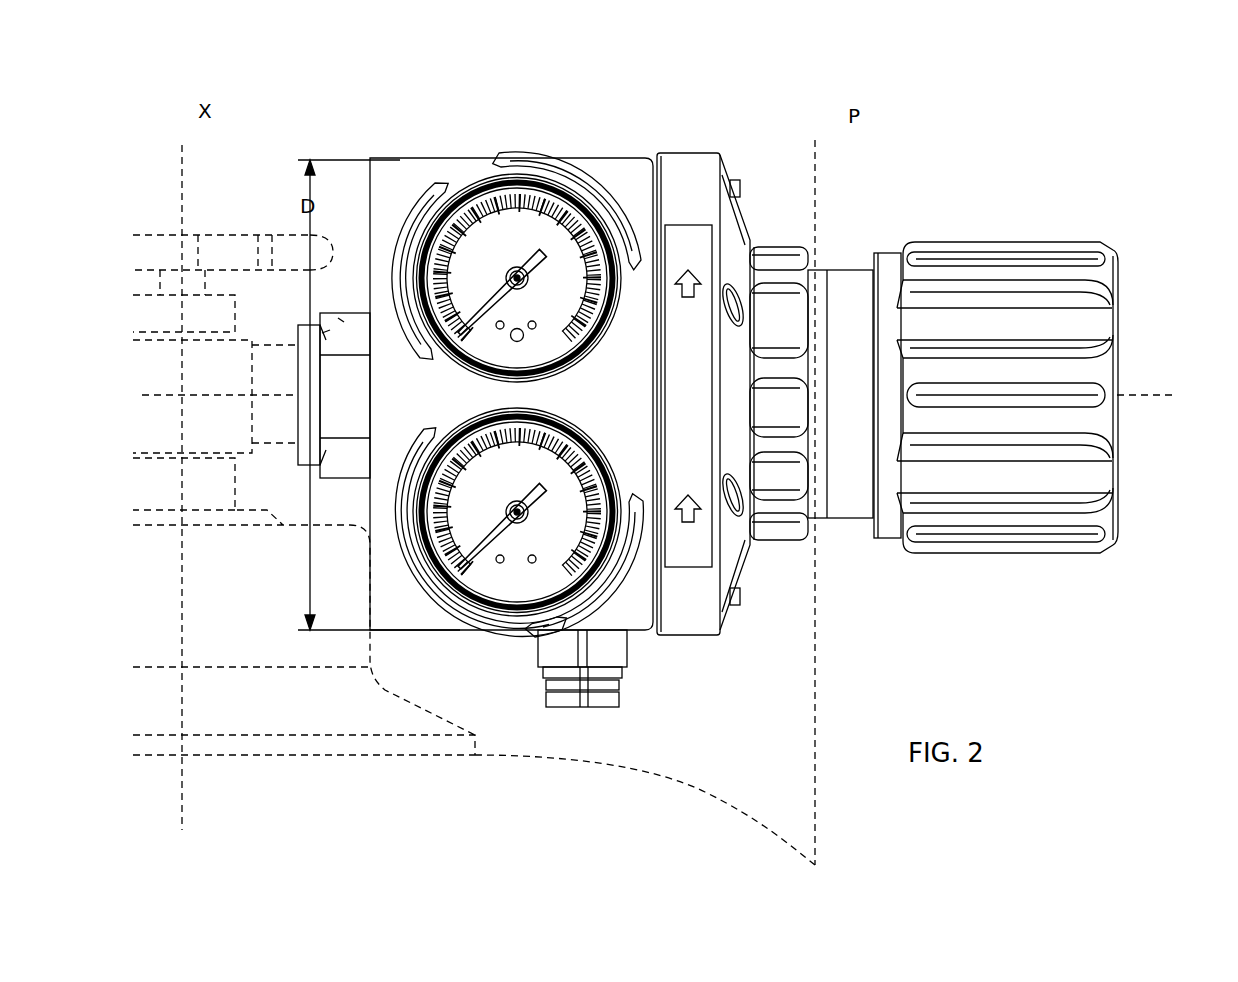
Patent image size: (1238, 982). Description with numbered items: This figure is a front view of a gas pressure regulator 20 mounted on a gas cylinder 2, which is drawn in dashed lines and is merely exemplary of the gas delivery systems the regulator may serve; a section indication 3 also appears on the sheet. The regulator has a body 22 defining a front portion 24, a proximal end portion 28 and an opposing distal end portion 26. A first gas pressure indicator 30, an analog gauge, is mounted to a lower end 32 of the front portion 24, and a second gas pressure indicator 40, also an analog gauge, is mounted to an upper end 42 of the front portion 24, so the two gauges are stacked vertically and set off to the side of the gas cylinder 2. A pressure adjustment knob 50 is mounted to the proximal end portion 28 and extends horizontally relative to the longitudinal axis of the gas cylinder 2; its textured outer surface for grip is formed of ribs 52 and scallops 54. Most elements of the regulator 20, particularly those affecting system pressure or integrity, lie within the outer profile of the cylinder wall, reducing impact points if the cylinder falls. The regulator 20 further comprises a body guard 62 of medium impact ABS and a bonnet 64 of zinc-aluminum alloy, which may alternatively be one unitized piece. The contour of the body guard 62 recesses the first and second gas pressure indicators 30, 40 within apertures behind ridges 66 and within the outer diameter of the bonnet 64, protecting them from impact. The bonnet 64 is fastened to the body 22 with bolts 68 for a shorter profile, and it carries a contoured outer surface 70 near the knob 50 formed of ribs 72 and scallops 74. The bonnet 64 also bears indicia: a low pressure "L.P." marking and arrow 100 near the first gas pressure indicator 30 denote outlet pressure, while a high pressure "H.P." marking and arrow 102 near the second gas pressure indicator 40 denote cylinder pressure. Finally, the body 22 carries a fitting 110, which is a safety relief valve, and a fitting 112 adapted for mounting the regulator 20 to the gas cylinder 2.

The gas cylinder 2 is at (710, 778).
The section line 3- 3 is at (152, 412).
The gas pressure regulator 20 is at (820, 93).
The body 22 is at (597, 158).
The front portion 24 is at (378, 492).
The distal end portion 26 is at (338, 291).
The proximal end portion 28 is at (754, 213).
The first gas pressure indicator 30 is at (535, 580).
The lower end 32 is at (511, 652).
The second gas pressure indicator 40 is at (505, 200).
The upper end 42 is at (524, 123).
The pressure adjustment knob 50 is at (1067, 219).
The ribs 52 is at (1090, 405).
The scallops 54 is at (1100, 325).
The body guard 62 is at (628, 165).
The bonnet 64 is at (690, 165).
The ridges 66 is at (446, 200).
The bolts 68 is at (735, 517).
The contoured outer surface 70 is at (803, 243).
The ribs 72 is at (815, 512).
The scallops 74 is at (800, 325).
The low pressure indicia and arrow 100 is at (690, 574).
The high pressure indicia and arrow 102 is at (690, 233).
The fitting 110 is at (625, 645).
The fitting 112 is at (342, 320).